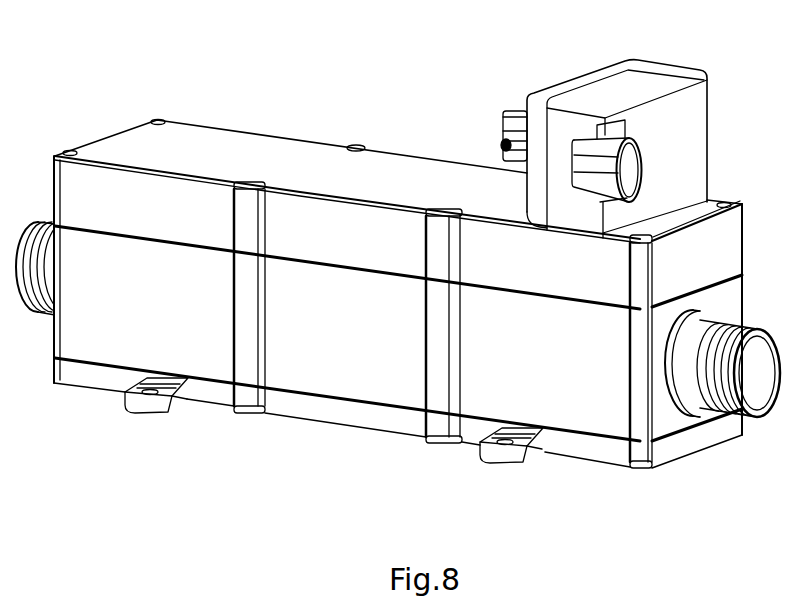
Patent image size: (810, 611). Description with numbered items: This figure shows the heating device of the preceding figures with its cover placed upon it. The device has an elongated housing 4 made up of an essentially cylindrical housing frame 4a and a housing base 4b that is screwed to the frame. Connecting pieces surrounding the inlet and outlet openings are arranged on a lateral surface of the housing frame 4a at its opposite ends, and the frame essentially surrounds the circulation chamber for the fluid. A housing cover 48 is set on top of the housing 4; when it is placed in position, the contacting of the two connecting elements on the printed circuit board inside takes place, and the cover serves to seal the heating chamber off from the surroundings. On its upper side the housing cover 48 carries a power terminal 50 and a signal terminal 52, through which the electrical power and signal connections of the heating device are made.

The housing 4 is at (238, 114).
The housing frame 4a is at (292, 375).
The housing base 4b is at (322, 415).
The housing cover 48 is at (301, 147).
The power terminal 50 is at (633, 163).
The signal terminal 52 is at (495, 121).